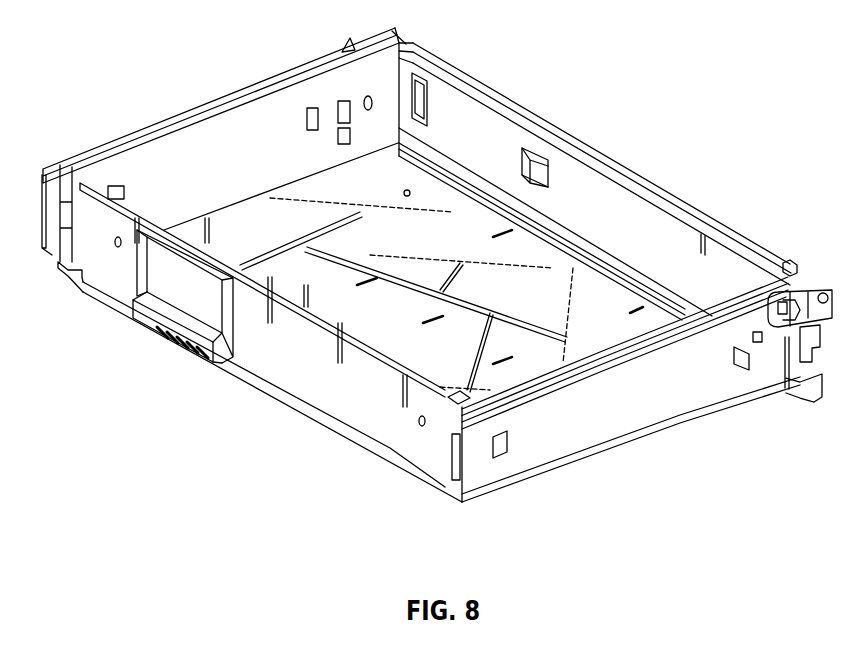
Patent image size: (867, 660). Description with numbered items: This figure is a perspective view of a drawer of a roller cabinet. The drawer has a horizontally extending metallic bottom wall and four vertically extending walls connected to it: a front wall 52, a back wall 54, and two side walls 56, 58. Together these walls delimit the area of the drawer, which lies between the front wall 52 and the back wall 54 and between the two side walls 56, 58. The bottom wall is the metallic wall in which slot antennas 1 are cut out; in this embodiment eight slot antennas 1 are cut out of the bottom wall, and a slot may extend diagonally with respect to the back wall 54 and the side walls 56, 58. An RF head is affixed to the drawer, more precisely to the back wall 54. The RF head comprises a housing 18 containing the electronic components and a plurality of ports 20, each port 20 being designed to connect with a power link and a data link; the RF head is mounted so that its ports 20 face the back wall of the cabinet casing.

The slot antenna 1 is at (439, 194).
The housing 18 is at (165, 356).
The port 20 is at (196, 396).
The front wall 52 is at (649, 151).
The back wall 54 is at (374, 425).
The side wall 56 is at (584, 427).
The side wall 58 is at (164, 104).